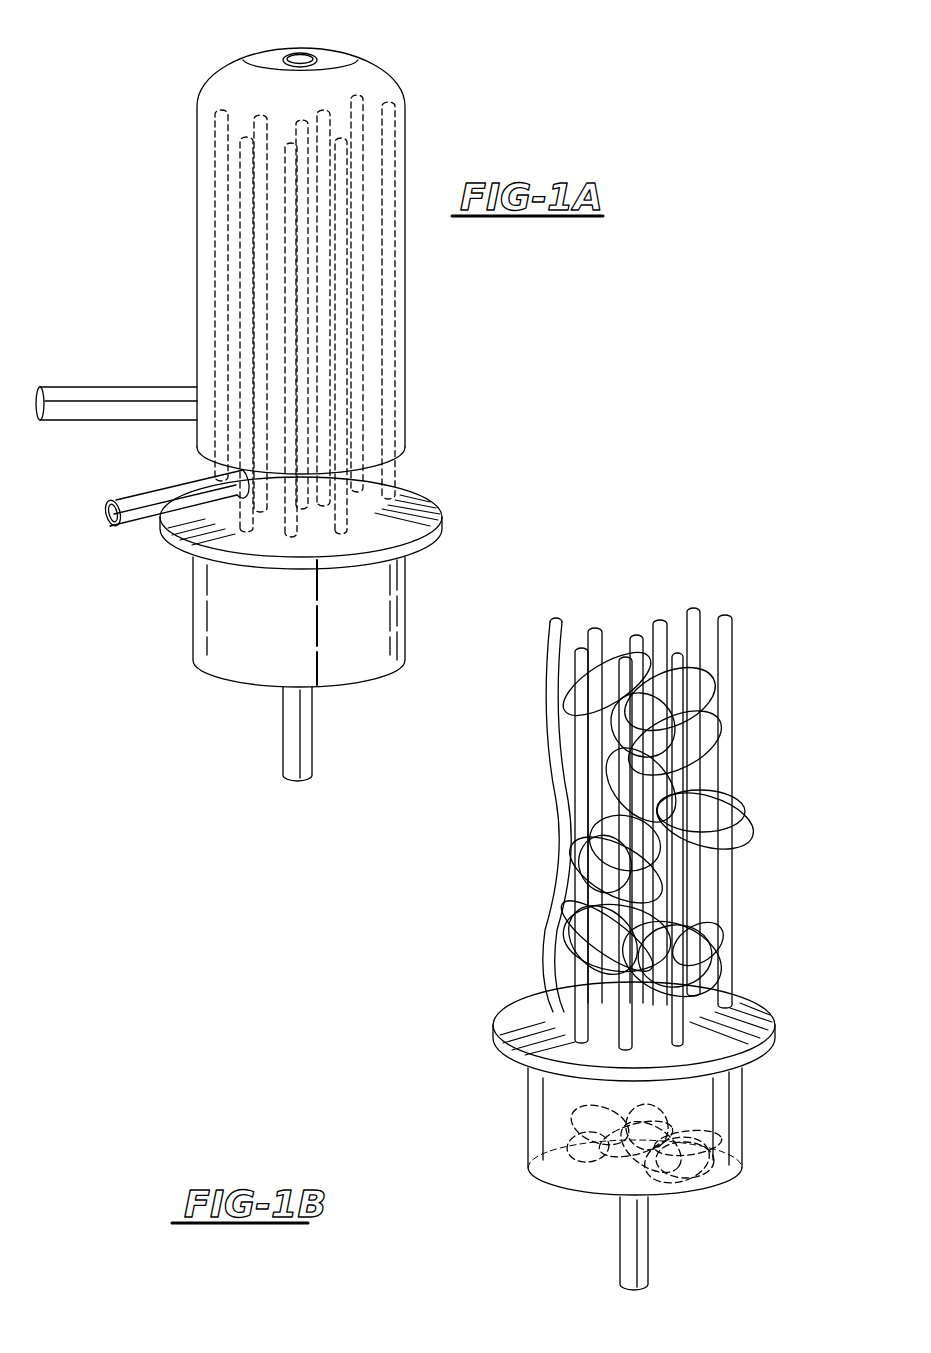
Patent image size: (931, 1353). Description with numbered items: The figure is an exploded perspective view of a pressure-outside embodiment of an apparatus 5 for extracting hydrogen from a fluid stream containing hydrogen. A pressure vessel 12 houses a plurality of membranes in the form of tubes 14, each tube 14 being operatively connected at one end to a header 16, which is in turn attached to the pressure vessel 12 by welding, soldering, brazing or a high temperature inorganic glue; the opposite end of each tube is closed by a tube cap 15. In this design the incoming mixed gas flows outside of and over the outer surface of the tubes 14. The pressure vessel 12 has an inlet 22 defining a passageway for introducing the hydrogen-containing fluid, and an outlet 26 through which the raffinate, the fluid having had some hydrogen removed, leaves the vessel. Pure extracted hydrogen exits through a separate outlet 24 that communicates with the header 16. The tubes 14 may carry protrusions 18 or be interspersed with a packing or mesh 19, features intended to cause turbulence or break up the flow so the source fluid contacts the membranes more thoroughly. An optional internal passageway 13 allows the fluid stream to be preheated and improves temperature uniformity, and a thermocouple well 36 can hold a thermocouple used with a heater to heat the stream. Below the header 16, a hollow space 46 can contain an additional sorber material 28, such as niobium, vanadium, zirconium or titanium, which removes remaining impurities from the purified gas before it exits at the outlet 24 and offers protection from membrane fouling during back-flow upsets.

In FIG. 1A, the apparatus 5 is at (136, 143).
In FIG. 1A, the pressure vessel 12 is at (197, 205).
In FIG. 1A, the internal passageway 13 is at (200, 302).
In FIG. 1A, the thermocouple well 36 is at (288, 50).
In FIG. 1A, the inlet 22 is at (76, 388).
In FIG. 1A, the outlet 26 is at (140, 527).
In FIG. 1A, the outlet 24 is at (292, 707).
In FIG. 1B, the outlet 24 is at (628, 1222).
In FIG. 1B, the tube cap 15 is at (592, 628).
In FIG. 1B, the tubes 14 is at (730, 748).
In FIG. 1B, the protrusions 18 is at (760, 900).
In FIG. 1B, the packing or mesh 19 is at (727, 970).
In FIG. 1B, the header 16 is at (512, 1000).
In FIG. 1B, the sorber material 28 is at (530, 1165).
In FIG. 1B, the hollow space 46 is at (540, 1130).